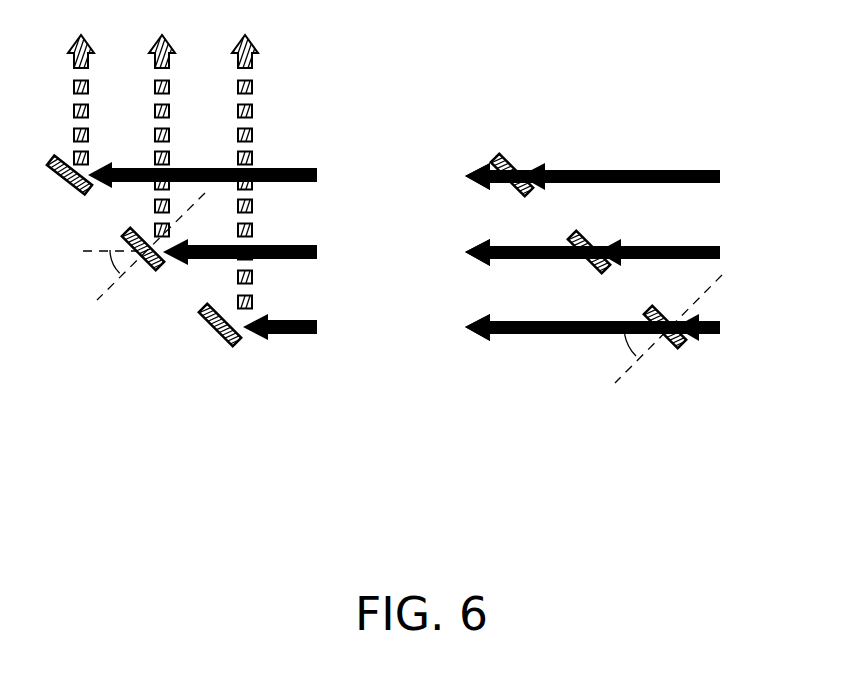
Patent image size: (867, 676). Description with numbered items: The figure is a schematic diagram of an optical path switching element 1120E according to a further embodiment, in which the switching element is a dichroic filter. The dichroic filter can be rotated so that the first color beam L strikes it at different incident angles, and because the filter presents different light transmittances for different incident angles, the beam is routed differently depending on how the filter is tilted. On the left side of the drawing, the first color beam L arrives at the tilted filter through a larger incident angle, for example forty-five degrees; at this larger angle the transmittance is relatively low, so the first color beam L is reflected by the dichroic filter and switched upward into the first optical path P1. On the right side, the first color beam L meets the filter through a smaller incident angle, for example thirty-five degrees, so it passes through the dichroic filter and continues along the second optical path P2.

The first optical path P1 is at (253, 87).
The second optical path P2 is at (505, 246).
The first color beam L is at (303, 168).
The optical path switching element 1120E is at (772, 493).